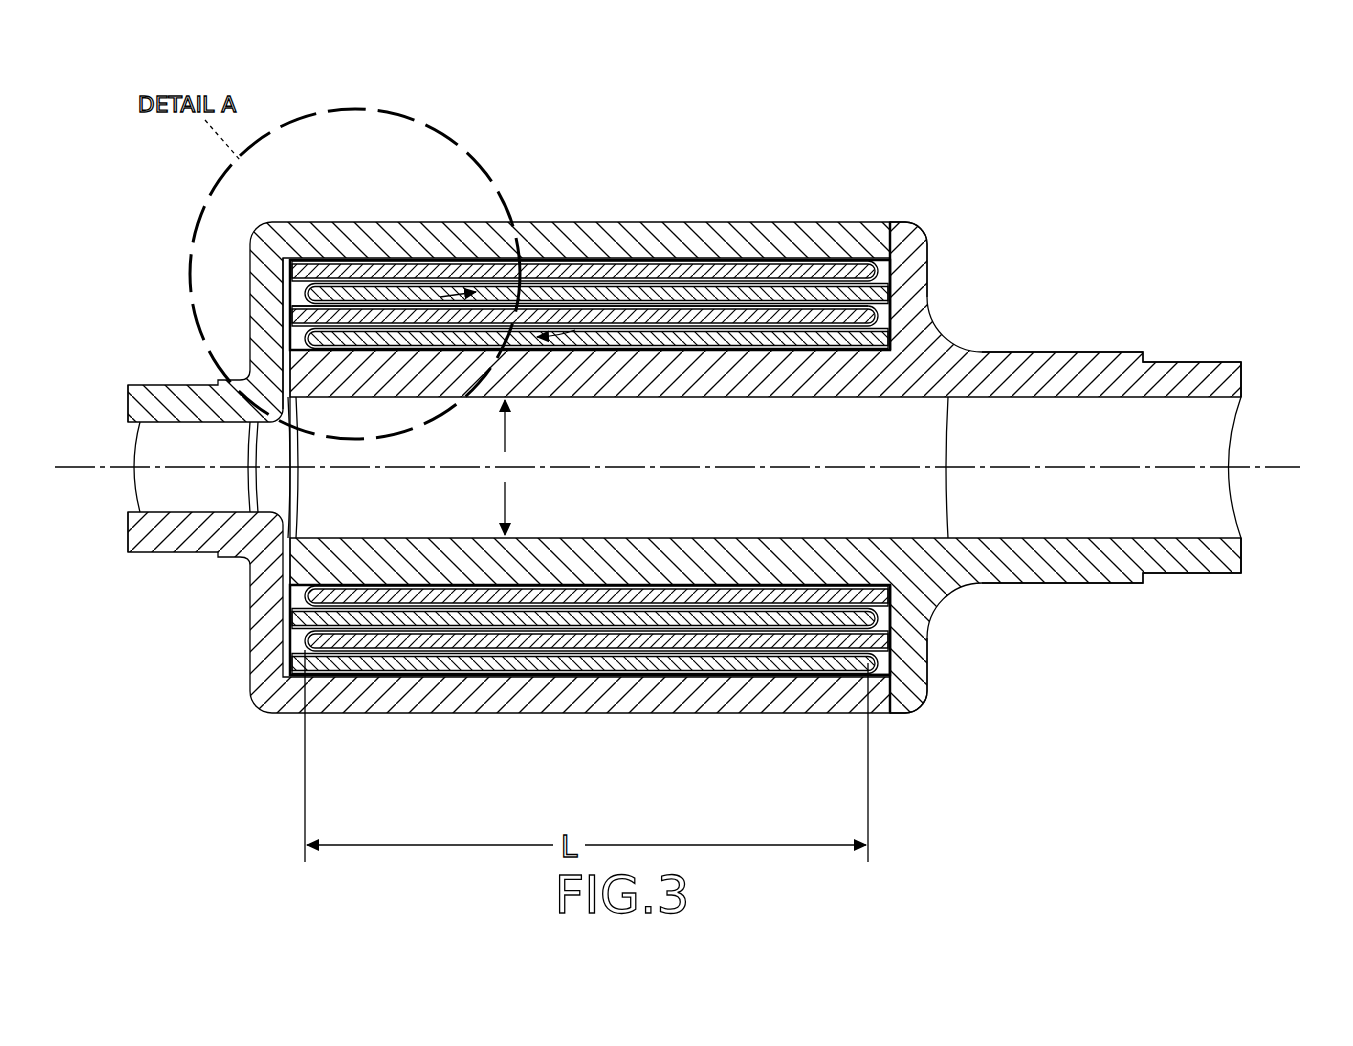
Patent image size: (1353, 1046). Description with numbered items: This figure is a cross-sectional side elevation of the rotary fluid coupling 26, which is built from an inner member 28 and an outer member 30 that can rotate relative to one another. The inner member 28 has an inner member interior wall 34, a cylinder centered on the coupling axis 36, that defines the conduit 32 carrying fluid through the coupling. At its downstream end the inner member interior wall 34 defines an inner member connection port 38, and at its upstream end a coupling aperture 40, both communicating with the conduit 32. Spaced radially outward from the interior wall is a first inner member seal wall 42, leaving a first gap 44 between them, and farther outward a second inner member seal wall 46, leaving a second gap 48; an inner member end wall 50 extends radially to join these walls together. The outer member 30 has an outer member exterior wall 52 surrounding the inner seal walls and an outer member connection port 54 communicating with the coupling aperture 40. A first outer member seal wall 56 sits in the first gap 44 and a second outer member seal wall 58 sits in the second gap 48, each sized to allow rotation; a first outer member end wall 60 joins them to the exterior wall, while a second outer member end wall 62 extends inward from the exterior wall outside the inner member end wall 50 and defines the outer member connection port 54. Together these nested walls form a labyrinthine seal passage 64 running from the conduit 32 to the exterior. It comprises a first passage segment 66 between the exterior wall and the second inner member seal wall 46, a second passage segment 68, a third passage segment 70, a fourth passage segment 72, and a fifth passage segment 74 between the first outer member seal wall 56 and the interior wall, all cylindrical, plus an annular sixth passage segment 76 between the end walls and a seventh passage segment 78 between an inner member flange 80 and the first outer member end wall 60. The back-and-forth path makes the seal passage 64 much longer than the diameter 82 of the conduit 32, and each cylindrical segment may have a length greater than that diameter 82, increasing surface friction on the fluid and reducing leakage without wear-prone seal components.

The rotary fluid coupling 26 is at (920, 190).
The inner member 28 is at (936, 596).
The outer member 30 is at (256, 394).
The conduit 32 is at (1092, 568).
The inner member interior wall 34 is at (1074, 364).
The coupling axis 36 is at (1268, 462).
The inner member connection port 38 is at (1228, 520).
The coupling aperture 40 is at (298, 460).
The first inner member seal wall 42 is at (776, 312).
The first gap 44 is at (583, 335).
The second inner member seal wall 46 is at (738, 268).
The second gap 48 is at (517, 305).
The inner member end wall 50 is at (303, 574).
The outer member exterior wall 52 is at (440, 235).
The outer member connection port 54 is at (135, 494).
The first outer member seal wall 56 is at (355, 340).
The second outer member seal wall 58 is at (398, 290).
The first outer member end wall 60 is at (905, 260).
The second outer member end wall 62 is at (267, 337).
The seal passage 64 is at (362, 682).
The first passage segment 66 is at (413, 680).
The second passage segment 68 is at (486, 660).
The third passage segment 70 is at (540, 615).
The fourth passage segment 72 is at (600, 632).
The fifth passage segment 74 is at (640, 592).
The sixth passage segment 76 is at (290, 618).
The seventh passage segment 78 is at (895, 656).
The inner member flange 80 is at (910, 298).
The diameter 82 is at (505, 467).